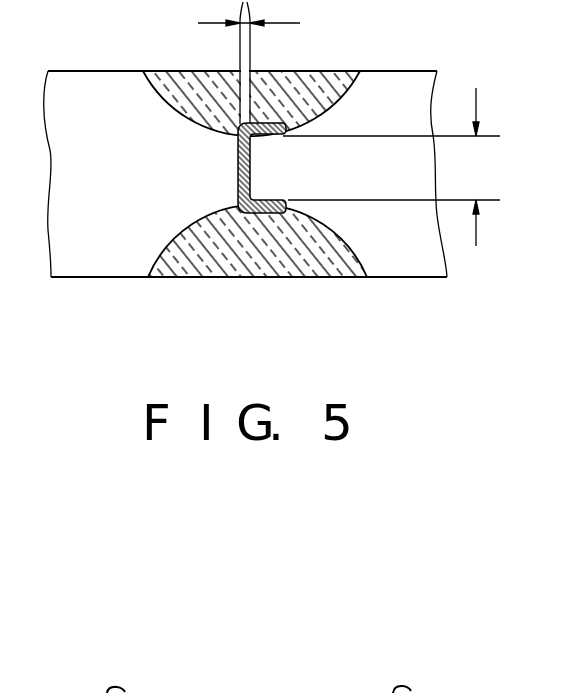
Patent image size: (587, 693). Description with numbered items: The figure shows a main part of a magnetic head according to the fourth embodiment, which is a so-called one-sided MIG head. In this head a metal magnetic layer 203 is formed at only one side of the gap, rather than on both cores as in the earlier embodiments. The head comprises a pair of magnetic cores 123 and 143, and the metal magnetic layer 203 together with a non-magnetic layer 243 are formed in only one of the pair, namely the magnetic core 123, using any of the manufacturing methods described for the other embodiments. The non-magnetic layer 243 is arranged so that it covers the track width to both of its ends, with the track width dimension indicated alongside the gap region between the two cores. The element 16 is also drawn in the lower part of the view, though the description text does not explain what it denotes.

The magnetic core 143 is at (82, 72).
The magnetic core 123 is at (401, 82).
The lower hatched member 16 is at (208, 262).
The metal magnetic layer 203 is at (263, 178).
The non-magnetic layer 243 is at (238, 186).